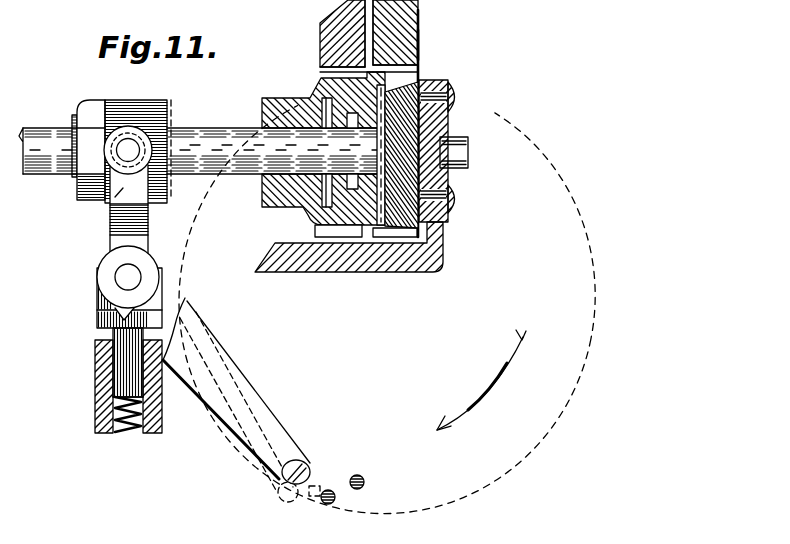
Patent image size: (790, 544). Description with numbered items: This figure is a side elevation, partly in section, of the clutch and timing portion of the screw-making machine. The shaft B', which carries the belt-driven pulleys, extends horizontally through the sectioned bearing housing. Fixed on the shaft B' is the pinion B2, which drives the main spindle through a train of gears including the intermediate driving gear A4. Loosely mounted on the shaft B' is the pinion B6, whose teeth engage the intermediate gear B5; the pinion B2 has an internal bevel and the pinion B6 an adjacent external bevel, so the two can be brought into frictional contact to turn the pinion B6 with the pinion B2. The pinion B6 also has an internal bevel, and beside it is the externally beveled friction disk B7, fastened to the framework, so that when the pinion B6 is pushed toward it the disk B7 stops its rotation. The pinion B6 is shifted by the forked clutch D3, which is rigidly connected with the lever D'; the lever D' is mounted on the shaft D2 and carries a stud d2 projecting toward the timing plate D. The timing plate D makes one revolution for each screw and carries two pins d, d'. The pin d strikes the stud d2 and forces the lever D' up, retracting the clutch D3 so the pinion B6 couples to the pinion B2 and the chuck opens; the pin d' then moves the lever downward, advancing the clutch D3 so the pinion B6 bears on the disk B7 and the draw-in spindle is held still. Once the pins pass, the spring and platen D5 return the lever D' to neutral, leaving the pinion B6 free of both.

The intermediate driving gear A4 is at (345, 136).
The shaft B' is at (243, 132).
The pinion B2 is at (312, 92).
The intermediate gear B5 is at (419, 33).
The pinion B6 is at (420, 72).
The friction disk B7 is at (453, 182).
The timing plate D is at (387, 295).
The lever D' is at (241, 400).
The shaft D2 is at (116, 277).
The forked clutch D3 is at (125, 192).
The spring and platen D5 is at (123, 363).
The pin d is at (330, 516).
The pin d' is at (357, 459).
The stud d2 is at (302, 455).